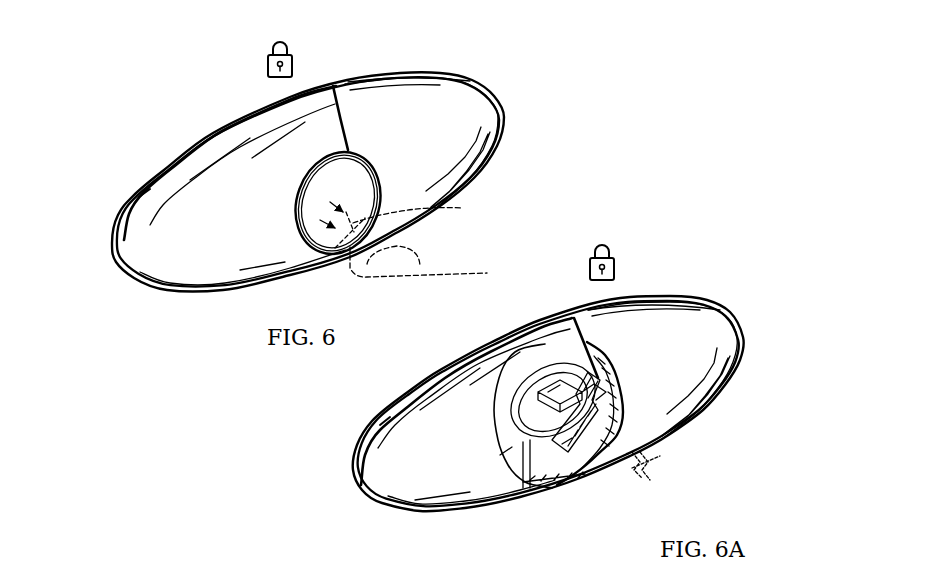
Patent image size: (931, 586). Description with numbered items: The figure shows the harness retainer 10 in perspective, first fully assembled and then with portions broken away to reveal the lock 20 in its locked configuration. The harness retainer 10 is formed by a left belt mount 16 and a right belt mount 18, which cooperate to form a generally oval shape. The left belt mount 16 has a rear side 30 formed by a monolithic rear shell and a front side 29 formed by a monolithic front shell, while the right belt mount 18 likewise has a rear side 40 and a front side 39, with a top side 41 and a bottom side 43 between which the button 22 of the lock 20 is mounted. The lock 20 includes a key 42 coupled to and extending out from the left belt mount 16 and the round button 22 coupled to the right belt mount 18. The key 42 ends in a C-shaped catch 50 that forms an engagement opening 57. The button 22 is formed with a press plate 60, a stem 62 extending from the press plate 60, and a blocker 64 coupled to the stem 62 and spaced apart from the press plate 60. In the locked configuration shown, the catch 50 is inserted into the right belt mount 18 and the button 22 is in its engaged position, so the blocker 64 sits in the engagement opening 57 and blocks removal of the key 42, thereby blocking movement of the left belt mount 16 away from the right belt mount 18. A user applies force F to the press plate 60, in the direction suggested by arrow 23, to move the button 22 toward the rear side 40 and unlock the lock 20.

In FIG. 6, the harness retainer 10 is at (505, 70).
In FIG. 6A, the harness retainer 10 is at (721, 224).
In FIG. 6, the left belt mount 16 is at (107, 203).
In FIG. 6A, the left belt mount 16 is at (345, 443).
In FIG. 6, the right belt mount 18 is at (527, 101).
In FIG. 6A, the right belt mount 18 is at (740, 308).
In FIG. 6, the lock 20 is at (378, 156).
In FIG. 6A, the lock 20 is at (608, 352).
In FIG. 6, the button 22 is at (331, 226).
In FIG. 6A, the button 22 is at (600, 447).
In FIG. 6A, the arrow 23 is at (656, 462).
In FIG. 6, the front side 29 is at (199, 285).
In FIG. 6A, the front side 29 is at (437, 490).
In FIG. 6, the rear side 30 is at (206, 145).
In FIG. 6A, the rear side 30 is at (374, 418).
In FIG. 6, the front side 39 is at (459, 148).
In FIG. 6A, the front side 39 is at (688, 394).
In FIG. 6, the rear side 40 is at (360, 82).
In FIG. 6A, the rear side 40 is at (640, 297).
In FIG. 6, the top side 41 is at (440, 77).
In FIG. 6A, the top side 41 is at (688, 301).
In FIG. 6A, the key 42 is at (500, 427).
In FIG. 6, the bottom side 43 is at (474, 190).
In FIG. 6A, the bottom side 43 is at (700, 436).
In FIG. 6A, the catch 50 is at (520, 458).
In FIG. 6A, the engagement opening 57 is at (531, 446).
In FIG. 6A, the press plate 60 is at (608, 432).
In FIG. 6A, the stem 62 is at (545, 381).
In FIG. 6A, the blocker 64 is at (585, 372).
In FIG. 6, the force F is at (350, 222).